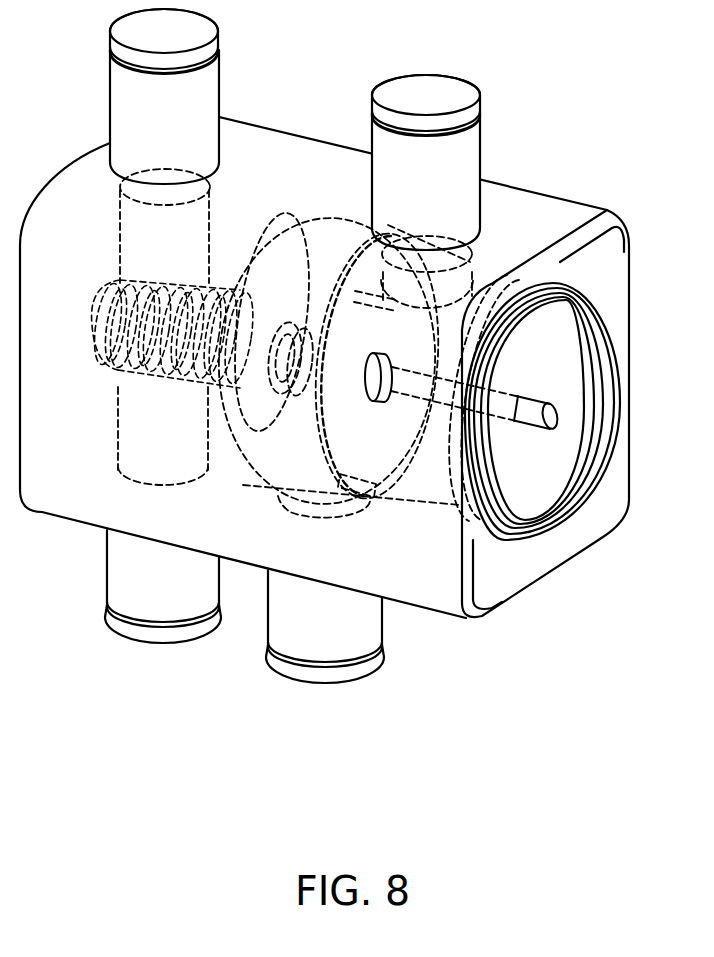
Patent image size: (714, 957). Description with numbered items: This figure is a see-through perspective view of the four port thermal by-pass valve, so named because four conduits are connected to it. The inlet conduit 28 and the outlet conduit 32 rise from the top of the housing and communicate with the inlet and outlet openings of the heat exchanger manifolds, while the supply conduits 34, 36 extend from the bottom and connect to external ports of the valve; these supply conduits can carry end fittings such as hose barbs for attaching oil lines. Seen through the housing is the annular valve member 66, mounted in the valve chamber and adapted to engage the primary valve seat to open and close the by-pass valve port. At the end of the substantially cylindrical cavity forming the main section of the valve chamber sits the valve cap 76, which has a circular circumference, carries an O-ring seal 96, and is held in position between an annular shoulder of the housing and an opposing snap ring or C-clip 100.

The inlet conduit 28 is at (130, 103).
The outlet conduit 32 is at (466, 158).
The supply conduit 34 is at (352, 612).
The supply conduit 36 is at (132, 560).
The annular valve member 66 is at (294, 300).
The valve cap 76 is at (560, 357).
The O-ring seal 96 is at (417, 450).
The snap ring or C-clip 100 is at (552, 506).